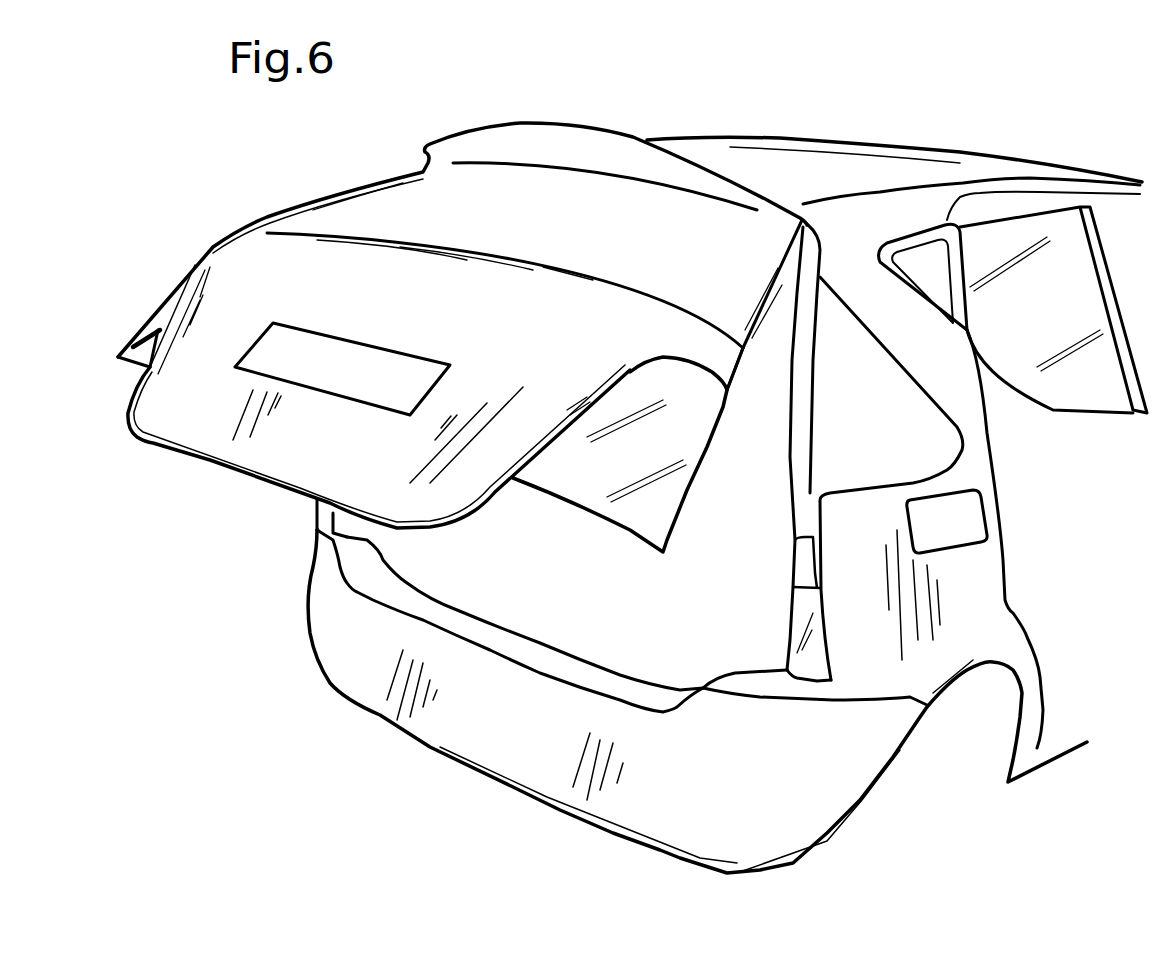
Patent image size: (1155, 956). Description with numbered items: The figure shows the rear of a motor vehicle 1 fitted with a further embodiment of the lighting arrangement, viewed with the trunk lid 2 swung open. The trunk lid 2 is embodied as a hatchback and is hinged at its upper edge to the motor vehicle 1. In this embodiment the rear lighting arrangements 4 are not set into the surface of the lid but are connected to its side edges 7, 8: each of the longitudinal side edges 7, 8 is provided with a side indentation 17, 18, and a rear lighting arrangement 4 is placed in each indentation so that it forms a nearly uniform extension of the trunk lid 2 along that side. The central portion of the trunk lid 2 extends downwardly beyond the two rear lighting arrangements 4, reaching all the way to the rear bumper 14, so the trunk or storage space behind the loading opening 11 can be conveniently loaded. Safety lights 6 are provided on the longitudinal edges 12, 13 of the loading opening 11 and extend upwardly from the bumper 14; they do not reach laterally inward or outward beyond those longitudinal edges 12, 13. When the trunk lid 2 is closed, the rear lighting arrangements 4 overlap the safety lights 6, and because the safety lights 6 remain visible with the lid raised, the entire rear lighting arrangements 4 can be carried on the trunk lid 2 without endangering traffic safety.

The motor vehicle 1 is at (800, 126).
The trunk lid 2 is at (276, 441).
The rear lighting arrangements 4 is at (143, 340).
The safety lights 6 is at (346, 533).
The side edge of the trunk lid 7 is at (743, 361).
The side edge of the trunk lid 8 is at (275, 217).
The loading opening 11 is at (713, 600).
The longitudinal edge of the loading opening 12 is at (318, 530).
The longitudinal edge of the loading opening 13 is at (797, 403).
The rear bumper 14 is at (437, 710).
The side indentation 17 is at (557, 443).
The side indentation 18 is at (173, 307).